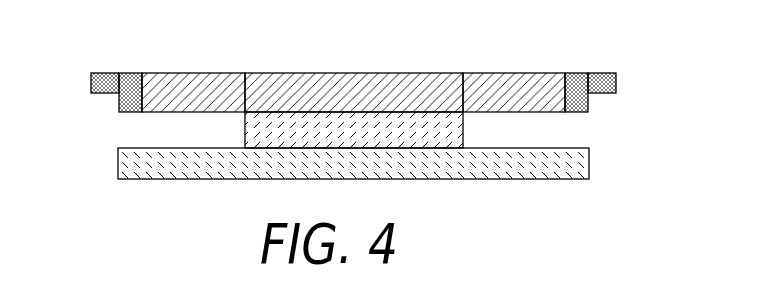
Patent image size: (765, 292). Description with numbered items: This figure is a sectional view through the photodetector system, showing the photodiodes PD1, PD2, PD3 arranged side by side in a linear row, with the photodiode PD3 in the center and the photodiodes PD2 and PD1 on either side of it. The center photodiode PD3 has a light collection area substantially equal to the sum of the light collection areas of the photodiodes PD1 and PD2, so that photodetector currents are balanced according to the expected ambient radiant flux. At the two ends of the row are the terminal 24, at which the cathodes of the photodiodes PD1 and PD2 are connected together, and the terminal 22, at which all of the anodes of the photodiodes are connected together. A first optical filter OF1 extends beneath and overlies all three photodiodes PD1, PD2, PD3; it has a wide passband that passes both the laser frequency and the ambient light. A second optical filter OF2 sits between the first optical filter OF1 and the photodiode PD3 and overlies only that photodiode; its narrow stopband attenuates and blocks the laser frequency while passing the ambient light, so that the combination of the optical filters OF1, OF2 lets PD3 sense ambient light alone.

The terminal 24 is at (90, 83).
The terminal 22 is at (617, 83).
The photodiode PD2 is at (185, 73).
The photodiode PD3 is at (347, 73).
The photodiode PD1 is at (532, 73).
The second optical filter OF2 is at (464, 131).
The first optical filter OF1 is at (589, 162).